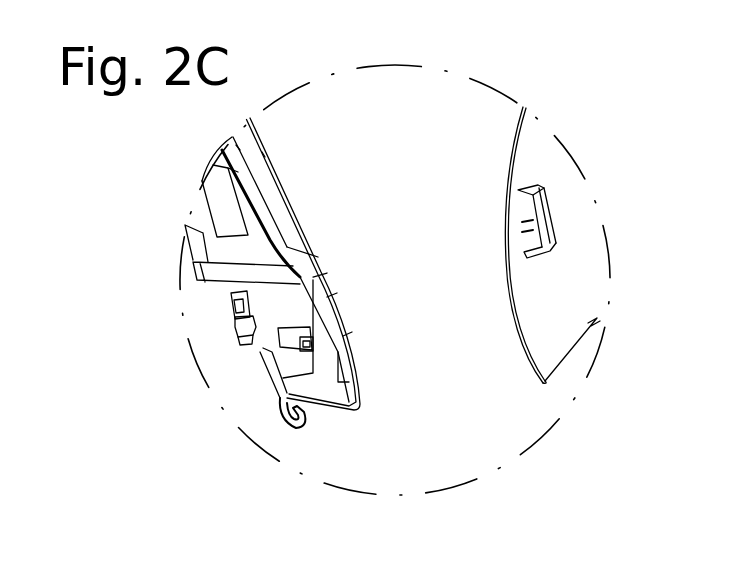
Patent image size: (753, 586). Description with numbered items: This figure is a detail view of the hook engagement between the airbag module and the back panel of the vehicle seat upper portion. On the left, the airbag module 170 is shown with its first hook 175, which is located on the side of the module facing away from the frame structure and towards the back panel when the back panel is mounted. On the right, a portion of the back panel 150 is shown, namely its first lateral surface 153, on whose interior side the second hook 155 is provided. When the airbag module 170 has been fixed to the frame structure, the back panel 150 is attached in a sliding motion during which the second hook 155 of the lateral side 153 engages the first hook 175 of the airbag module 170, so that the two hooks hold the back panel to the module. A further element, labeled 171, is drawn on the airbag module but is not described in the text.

The back panel 150 is at (530, 149).
The first lateral surface 153 is at (540, 328).
The second hook 155 is at (543, 212).
The airbag module 170 is at (200, 205).
The fastener clip 171 is at (240, 330).
The first hook 175 is at (290, 340).